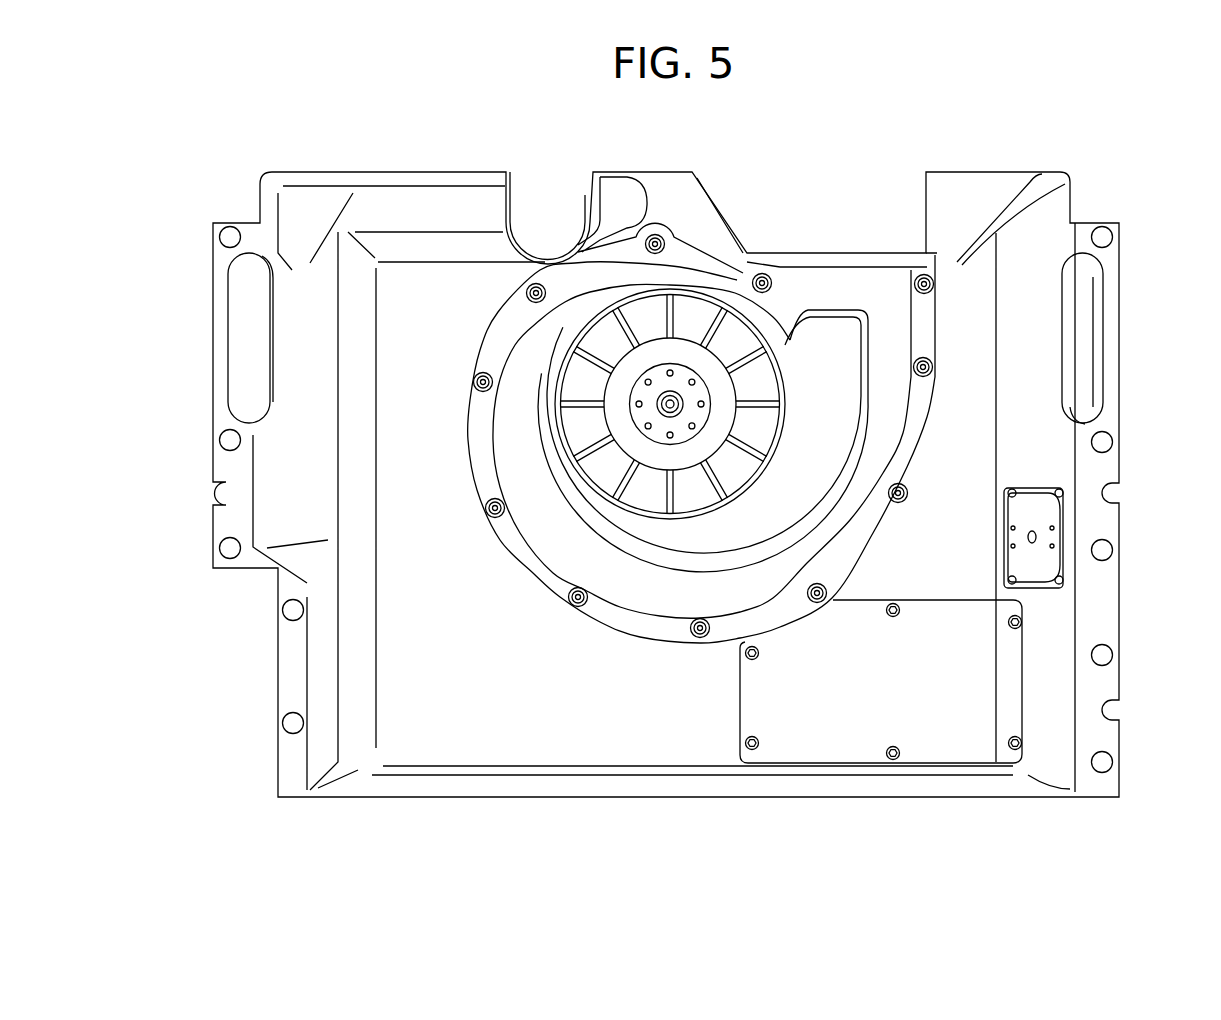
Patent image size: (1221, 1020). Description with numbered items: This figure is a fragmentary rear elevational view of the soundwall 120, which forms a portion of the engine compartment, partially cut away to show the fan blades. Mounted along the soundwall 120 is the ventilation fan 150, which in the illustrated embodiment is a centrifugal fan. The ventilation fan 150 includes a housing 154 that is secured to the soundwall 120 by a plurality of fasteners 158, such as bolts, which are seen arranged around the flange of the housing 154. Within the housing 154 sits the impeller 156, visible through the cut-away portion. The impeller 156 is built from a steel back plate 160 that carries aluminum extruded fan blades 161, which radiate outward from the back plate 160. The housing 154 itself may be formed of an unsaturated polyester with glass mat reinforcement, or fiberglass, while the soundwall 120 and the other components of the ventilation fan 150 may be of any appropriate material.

The soundwall 120 is at (650, 710).
The ventilation fan 150 is at (766, 220).
The housing 154 is at (887, 405).
The impeller 156 is at (740, 343).
The fasteners 158 is at (928, 363).
The back plate 160 is at (573, 427).
The fan blades 161 is at (770, 393).